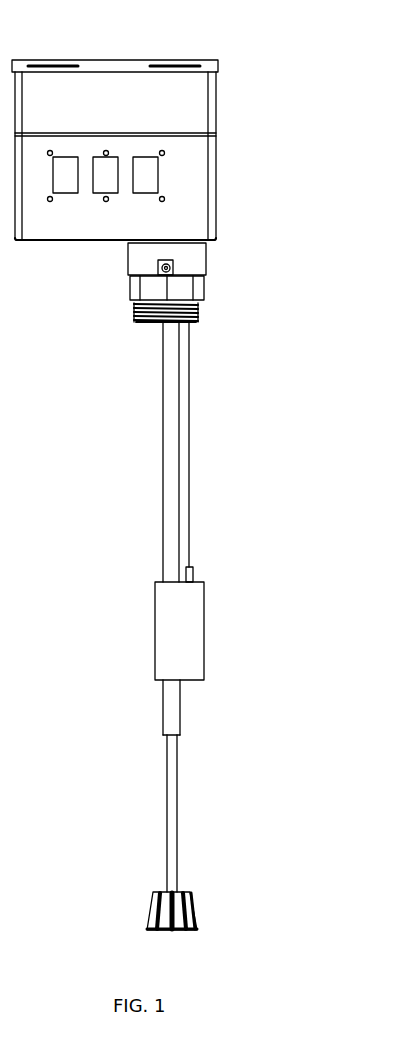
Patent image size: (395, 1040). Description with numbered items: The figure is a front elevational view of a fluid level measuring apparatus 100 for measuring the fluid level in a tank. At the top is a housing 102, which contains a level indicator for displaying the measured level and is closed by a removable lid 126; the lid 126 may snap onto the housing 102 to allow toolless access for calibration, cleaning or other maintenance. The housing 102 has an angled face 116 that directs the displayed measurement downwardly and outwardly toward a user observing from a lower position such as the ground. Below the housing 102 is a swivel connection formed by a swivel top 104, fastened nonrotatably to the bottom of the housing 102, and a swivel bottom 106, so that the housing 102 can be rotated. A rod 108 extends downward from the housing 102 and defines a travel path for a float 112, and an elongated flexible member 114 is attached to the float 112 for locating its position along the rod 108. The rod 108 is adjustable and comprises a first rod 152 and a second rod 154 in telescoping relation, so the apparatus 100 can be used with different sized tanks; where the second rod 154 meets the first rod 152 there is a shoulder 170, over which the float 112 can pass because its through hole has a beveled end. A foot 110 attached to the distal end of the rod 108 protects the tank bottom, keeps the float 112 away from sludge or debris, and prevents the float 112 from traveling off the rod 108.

The fluid level measuring apparatus 100 is at (196, 582).
The housing 102 is at (178, 124).
The swivel top 104 is at (207, 252).
The swivel bottom 106 is at (207, 292).
The rod 108 is at (156, 452).
The foot 110 is at (192, 905).
The float 112 is at (205, 637).
The elongated flexible member 114 is at (162, 527).
The angled face 116 is at (198, 178).
The removable lid 126 is at (105, 58).
The first rod 152 is at (163, 468).
The second rod 154 is at (165, 760).
The shoulder 170 is at (181, 738).